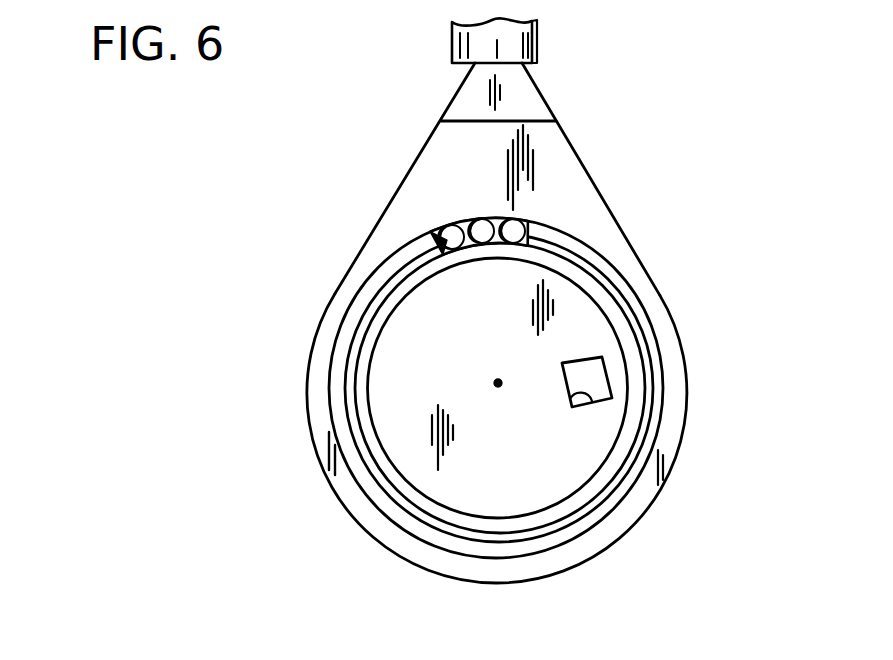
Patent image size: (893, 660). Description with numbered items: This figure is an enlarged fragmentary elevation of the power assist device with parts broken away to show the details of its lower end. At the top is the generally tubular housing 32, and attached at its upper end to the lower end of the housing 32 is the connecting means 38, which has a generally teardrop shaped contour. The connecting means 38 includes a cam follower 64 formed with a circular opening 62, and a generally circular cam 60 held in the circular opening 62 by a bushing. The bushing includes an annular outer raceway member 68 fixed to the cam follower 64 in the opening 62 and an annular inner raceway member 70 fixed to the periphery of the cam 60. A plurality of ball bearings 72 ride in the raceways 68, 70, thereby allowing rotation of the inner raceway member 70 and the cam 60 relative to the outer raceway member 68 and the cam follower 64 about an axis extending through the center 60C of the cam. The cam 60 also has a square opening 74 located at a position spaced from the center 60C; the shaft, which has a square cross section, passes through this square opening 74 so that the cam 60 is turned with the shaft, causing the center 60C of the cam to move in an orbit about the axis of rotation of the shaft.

The housing 32 is at (537, 43).
The connecting means 38 is at (366, 208).
The cam follower 64 is at (667, 316).
The circular opening 62 is at (334, 372).
The annular outer raceway member 68 is at (653, 430).
The annular inner raceway member 70 is at (633, 380).
The cam 60 is at (410, 457).
The center of the cam 60C is at (498, 383).
The opening 74 is at (563, 400).
The ball bearings 72 is at (478, 216).